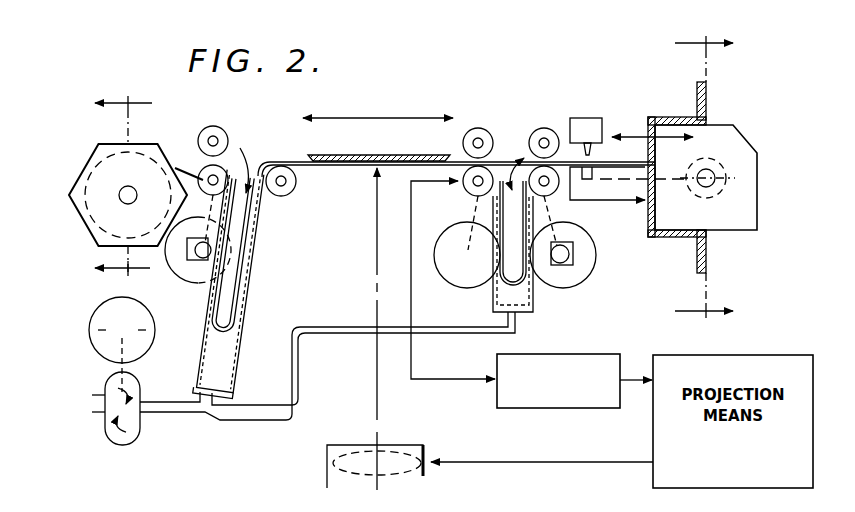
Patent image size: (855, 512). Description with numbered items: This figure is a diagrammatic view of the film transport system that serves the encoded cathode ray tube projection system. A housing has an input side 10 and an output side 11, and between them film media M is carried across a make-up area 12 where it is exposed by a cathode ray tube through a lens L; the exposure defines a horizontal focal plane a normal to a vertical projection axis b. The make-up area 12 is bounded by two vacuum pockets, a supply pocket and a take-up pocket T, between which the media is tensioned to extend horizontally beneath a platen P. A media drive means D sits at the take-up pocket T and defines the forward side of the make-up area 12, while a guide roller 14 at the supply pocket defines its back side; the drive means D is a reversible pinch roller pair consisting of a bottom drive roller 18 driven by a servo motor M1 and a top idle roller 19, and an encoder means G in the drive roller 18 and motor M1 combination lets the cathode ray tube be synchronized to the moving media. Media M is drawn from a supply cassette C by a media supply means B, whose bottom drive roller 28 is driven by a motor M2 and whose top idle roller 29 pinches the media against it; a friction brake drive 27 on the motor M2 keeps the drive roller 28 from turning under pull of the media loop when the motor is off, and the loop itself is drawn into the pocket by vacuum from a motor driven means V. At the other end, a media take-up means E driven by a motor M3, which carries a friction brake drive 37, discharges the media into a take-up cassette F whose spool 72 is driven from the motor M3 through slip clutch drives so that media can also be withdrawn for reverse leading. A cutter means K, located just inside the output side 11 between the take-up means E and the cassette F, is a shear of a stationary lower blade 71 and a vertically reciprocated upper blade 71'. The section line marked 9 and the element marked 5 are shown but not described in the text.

The input side 10 is at (72, 163).
The supply cassette C is at (93, 217).
The section line 9 is at (130, 188).
The top idle roller 29 is at (228, 141).
The bottom drive roller 28 is at (205, 172).
The media supply means B is at (218, 112).
The friction brake drive 27 is at (190, 256).
The film loop channel 5 is at (196, 354).
The guide roller 14 is at (281, 196).
The make-up area 12 is at (368, 190).
The focal plane a is at (332, 166).
The projection axis b is at (375, 305).
The film media M is at (297, 158).
The platen P is at (393, 157).
The top idle roller 19 is at (478, 127).
The media drive means D is at (491, 125).
The bottom drive roller 18 is at (470, 186).
The media take-up means E is at (550, 126).
The take-up pocket T is at (537, 303).
The motor M1 is at (458, 268).
The motor M3 is at (578, 272).
The friction brake drive 37 is at (575, 252).
The cutter means K is at (620, 96).
The lower blade 71 is at (641, 149).
The upper blade 71' is at (630, 194).
The output side 11 is at (722, 240).
The take-up cassette F is at (745, 124).
The spool 72 is at (718, 165).
The motor M2 is at (143, 340).
The motor driven means V is at (104, 385).
The encoder means G is at (540, 409).
The lens L is at (455, 412).